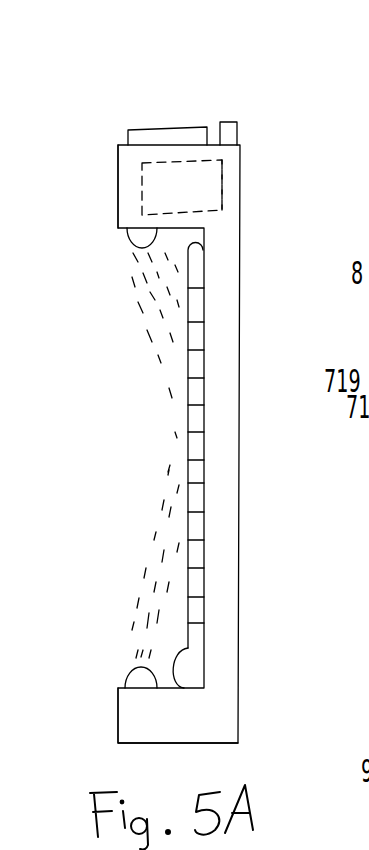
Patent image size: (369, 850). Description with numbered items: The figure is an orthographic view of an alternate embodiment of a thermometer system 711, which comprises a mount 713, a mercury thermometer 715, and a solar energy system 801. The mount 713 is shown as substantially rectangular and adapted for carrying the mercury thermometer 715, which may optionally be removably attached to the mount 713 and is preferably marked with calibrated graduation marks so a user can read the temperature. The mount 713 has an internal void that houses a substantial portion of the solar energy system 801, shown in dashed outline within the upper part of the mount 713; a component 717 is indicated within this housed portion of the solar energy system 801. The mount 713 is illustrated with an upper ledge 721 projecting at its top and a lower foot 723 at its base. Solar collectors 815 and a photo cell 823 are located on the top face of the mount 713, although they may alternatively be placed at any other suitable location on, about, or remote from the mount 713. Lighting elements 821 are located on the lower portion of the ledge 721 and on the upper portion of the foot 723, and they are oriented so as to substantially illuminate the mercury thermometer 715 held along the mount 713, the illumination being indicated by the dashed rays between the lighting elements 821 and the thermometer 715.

The mount 713 is at (240, 433).
The solar collectors 815 is at (172, 126).
The photo cell 823 is at (237, 120).
The solar energy system 801 is at (143, 172).
The circuit board 717 is at (222, 175).
The upper ledge 721 is at (117, 202).
The lighting elements 821 is at (132, 253).
The mercury thermometer 715 is at (185, 463).
The lower foot 723 is at (117, 717).
The thermometer system 711 is at (263, 538).